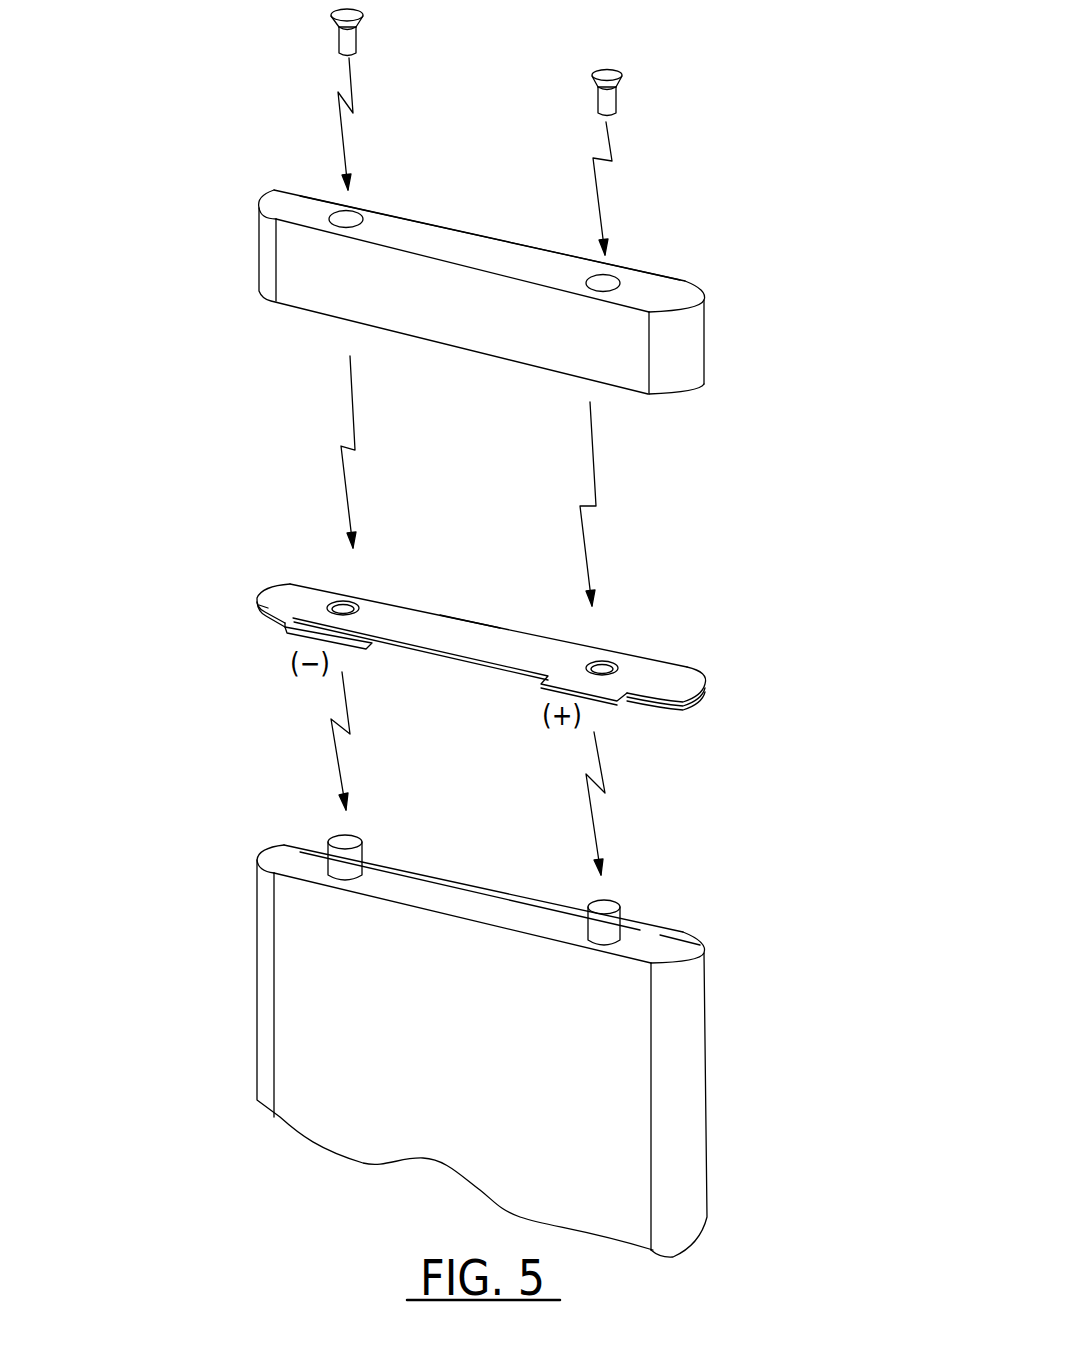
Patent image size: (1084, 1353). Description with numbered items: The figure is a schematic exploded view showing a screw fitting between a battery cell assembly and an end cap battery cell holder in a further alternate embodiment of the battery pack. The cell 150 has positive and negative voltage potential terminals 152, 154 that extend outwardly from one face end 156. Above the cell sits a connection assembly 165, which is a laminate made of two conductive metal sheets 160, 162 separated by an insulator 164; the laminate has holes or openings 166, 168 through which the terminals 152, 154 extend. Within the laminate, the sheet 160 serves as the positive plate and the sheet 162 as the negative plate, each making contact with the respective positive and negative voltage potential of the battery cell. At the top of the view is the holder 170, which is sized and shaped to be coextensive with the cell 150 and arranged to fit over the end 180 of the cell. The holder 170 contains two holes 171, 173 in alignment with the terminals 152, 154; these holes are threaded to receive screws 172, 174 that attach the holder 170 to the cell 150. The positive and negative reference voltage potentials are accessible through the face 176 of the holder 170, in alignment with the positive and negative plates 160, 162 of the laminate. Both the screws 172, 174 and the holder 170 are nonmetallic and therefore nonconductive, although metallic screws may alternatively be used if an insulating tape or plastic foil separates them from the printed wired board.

The cell 150 is at (745, 1072).
The positive voltage potential terminal 152 is at (340, 840).
The negative voltage potential terminal 154 is at (606, 905).
The face end 156 is at (291, 852).
The conductive metal sheet 160 is at (675, 672).
The conductive metal sheet 162 is at (268, 618).
The insulator 164 is at (268, 604).
The connection assembly 165 is at (460, 586).
The hole or opening 166 is at (605, 662).
The hole or opening 168 is at (340, 603).
The holder 170 is at (697, 355).
The hole 171 is at (360, 216).
The screw 172 is at (363, 14).
The hole 173 is at (613, 274).
The screw 174 is at (620, 72).
The face 176 is at (654, 286).
The end 180 is at (700, 927).